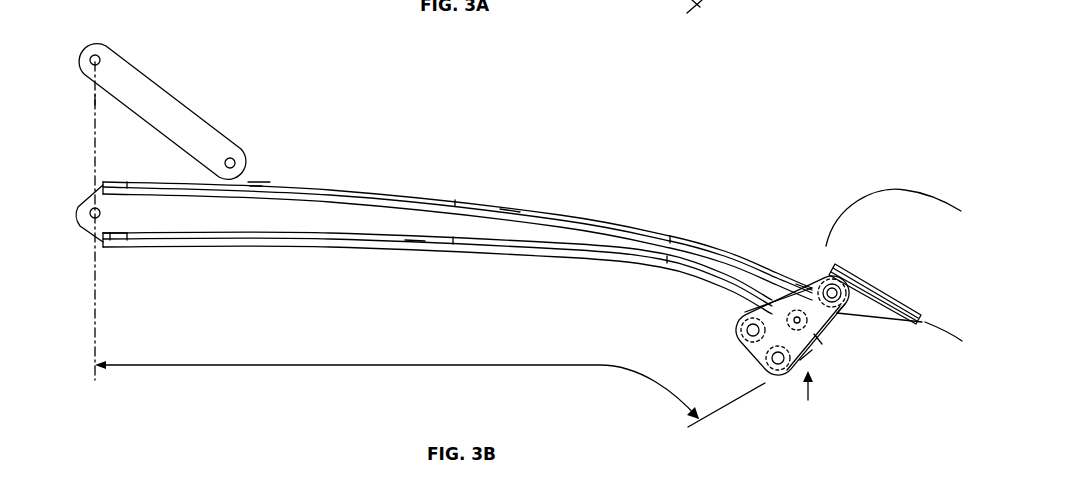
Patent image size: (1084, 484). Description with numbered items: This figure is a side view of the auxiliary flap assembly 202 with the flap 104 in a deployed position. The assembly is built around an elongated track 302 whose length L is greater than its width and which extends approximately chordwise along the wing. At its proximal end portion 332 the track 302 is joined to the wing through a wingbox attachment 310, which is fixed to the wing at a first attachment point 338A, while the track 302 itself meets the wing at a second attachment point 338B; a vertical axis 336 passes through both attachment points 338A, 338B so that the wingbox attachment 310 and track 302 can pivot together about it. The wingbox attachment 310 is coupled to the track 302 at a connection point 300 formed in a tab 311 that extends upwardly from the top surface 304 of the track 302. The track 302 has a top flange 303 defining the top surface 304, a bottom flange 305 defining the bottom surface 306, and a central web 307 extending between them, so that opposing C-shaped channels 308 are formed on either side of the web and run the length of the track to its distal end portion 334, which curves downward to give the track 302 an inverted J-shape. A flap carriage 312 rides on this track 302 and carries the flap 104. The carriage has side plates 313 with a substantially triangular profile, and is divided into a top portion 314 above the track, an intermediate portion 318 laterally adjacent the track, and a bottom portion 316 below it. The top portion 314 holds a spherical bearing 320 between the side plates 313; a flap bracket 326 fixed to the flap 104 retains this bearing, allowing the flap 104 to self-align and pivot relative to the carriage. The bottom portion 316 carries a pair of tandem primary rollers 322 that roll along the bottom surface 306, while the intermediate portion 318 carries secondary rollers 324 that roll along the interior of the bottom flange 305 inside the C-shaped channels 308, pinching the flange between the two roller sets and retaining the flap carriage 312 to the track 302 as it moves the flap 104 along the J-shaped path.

The flap 104 is at (887, 208).
The auxiliary flap assembly 202 is at (616, 132).
The connection point 300 is at (237, 150).
The track 302 is at (223, 220).
The top flange 303 is at (422, 200).
The top surface 304 is at (520, 208).
The bottom flange 305 is at (420, 241).
The bottom surface 306 is at (360, 249).
The central web 307 is at (348, 212).
The C-shaped channels 308 is at (285, 224).
The wingbox attachment 310 is at (128, 87).
The tab 311 is at (262, 181).
The flap carriage 312 is at (808, 402).
The side plates 313 is at (810, 290).
The top portion 314 is at (838, 322).
The bottom portion 316 is at (757, 350).
The intermediate portion 318 is at (820, 340).
The spherical bearing 320 is at (831, 288).
The primary rollers 322 is at (749, 333).
The secondary rollers 324 is at (745, 312).
The flap bracket 326 is at (893, 318).
The proximal end portion 332 is at (86, 236).
The distal end portion 334 is at (812, 355).
The axis 336 is at (95, 99).
The attachment point 338A is at (100, 58).
The attachment point 338B is at (100, 207).
The length L is at (325, 365).